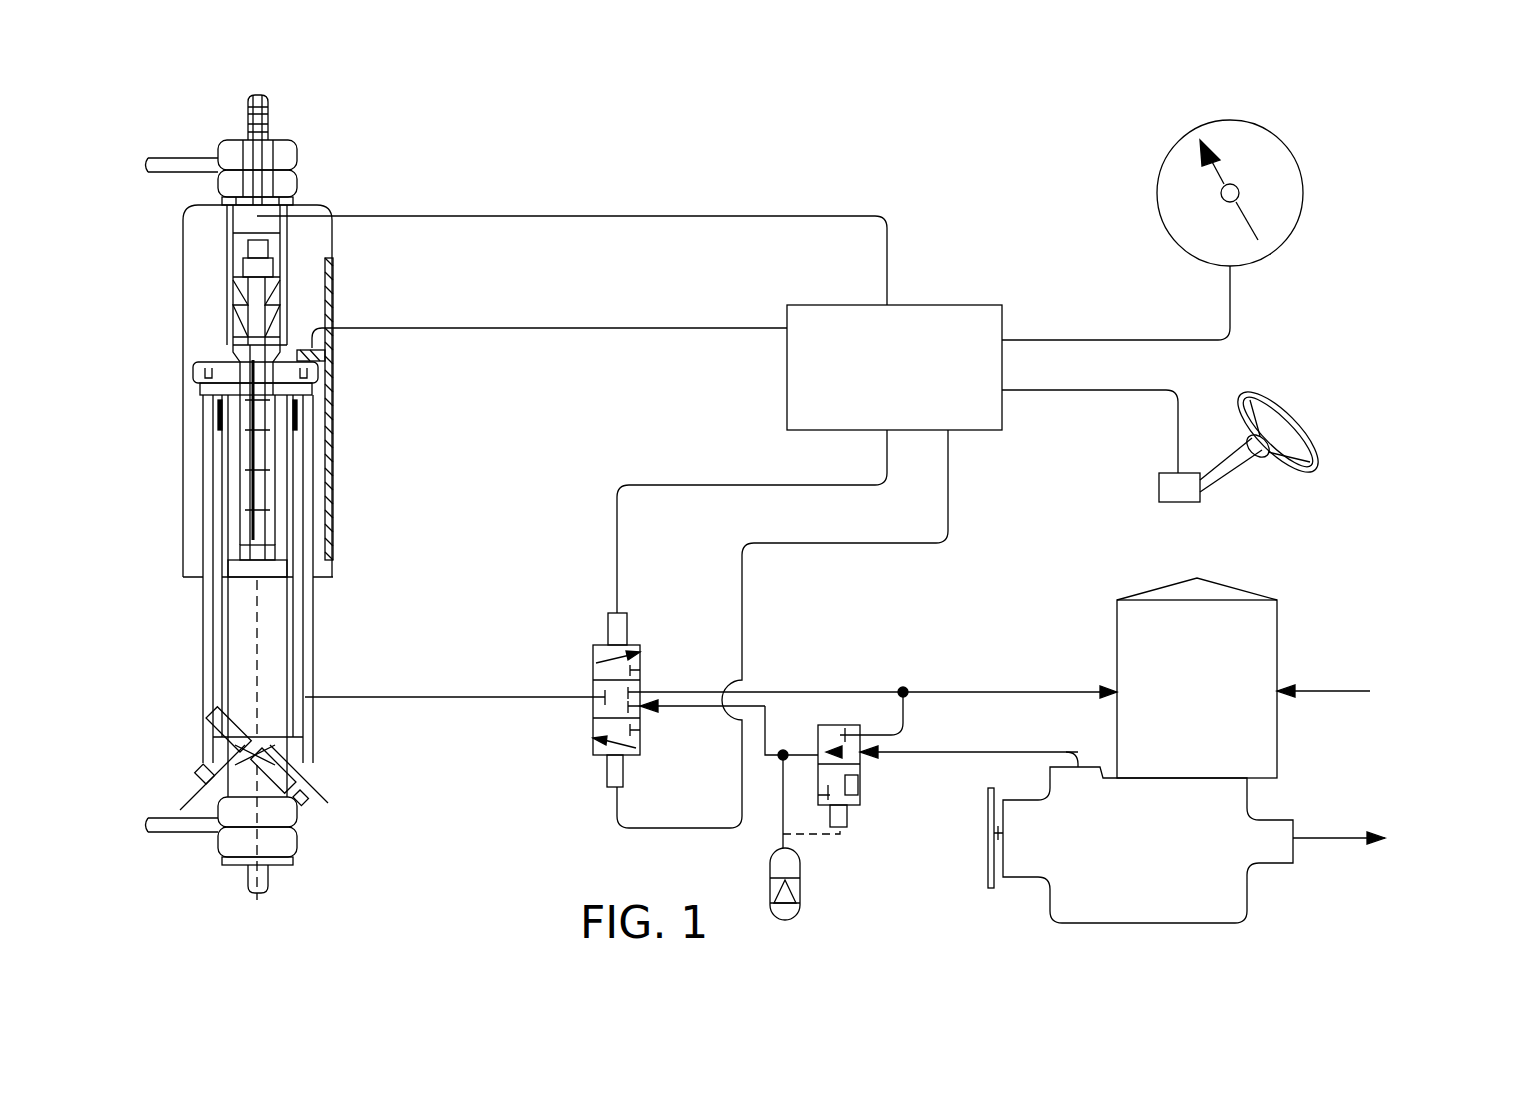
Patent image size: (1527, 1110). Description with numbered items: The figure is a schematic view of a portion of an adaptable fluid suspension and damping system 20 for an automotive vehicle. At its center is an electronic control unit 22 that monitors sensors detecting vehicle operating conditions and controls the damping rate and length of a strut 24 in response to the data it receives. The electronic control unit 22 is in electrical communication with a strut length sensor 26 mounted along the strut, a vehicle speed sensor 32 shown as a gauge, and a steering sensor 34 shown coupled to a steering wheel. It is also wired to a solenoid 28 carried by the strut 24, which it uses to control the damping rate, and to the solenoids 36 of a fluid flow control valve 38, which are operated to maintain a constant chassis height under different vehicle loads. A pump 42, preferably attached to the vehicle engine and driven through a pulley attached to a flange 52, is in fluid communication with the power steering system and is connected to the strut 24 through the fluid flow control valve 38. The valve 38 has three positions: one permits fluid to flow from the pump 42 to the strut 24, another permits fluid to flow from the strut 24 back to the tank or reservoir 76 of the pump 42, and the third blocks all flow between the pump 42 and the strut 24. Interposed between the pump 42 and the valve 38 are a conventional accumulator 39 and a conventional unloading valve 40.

The adaptable fluid suspension and damping system 20 is at (990, 175).
The electronic control unit 22 is at (955, 330).
The strut 24 is at (152, 305).
The strut length sensor 26 is at (350, 364).
The solenoid 28 is at (305, 282).
The vehicle speed sensor 32 is at (1278, 212).
The steering sensor 34 is at (1180, 487).
The solenoids 36 is at (612, 630).
The fluid flow control valve 38 is at (660, 648).
The accumulator 39 is at (805, 895).
The unloading valve 40 is at (870, 778).
The pump 42 is at (1292, 797).
The flange 52 is at (988, 852).
The reservoir 76 is at (1240, 648).